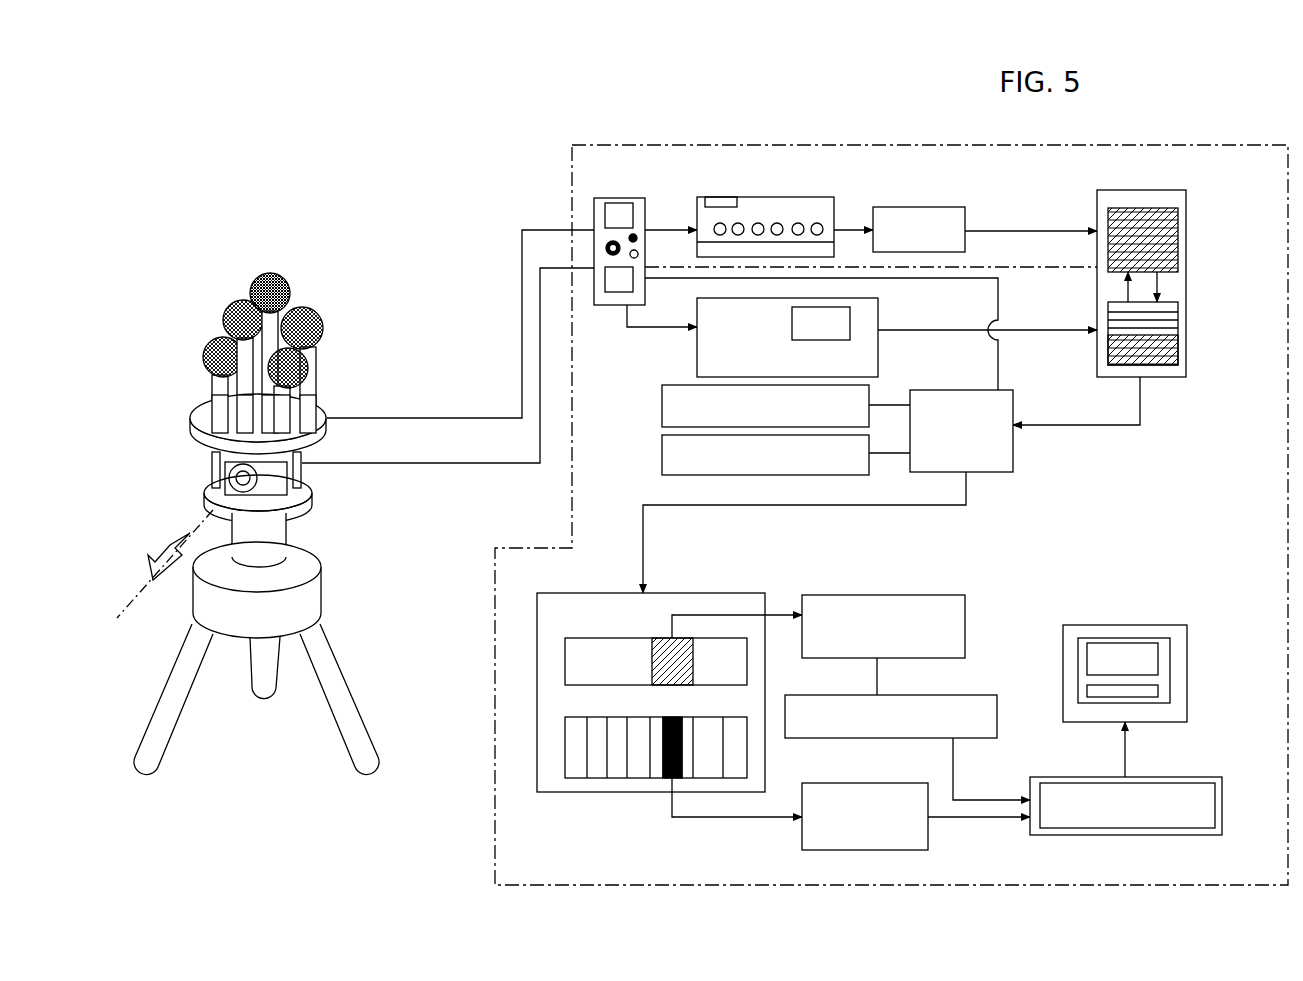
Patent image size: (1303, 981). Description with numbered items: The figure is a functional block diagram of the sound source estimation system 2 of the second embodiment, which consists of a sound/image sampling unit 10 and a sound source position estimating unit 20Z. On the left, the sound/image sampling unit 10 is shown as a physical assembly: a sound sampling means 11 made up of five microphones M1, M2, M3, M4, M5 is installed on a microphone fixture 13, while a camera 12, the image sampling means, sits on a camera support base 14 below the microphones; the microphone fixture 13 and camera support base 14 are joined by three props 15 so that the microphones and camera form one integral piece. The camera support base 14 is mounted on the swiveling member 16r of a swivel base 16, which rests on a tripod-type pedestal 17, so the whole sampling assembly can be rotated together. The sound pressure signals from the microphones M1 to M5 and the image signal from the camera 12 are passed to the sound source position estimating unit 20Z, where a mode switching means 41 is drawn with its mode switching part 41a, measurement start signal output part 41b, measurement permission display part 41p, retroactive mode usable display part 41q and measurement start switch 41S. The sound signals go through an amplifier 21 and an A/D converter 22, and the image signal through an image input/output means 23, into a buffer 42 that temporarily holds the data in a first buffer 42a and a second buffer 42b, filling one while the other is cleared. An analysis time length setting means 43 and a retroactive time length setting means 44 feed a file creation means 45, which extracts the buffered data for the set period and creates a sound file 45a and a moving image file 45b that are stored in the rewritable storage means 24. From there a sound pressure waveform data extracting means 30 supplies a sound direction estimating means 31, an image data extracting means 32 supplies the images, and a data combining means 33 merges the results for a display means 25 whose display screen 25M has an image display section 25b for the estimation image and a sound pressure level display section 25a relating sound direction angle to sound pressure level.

The sound source estimation system 2 is at (413, 225).
The sound/image sampling unit 10 is at (345, 347).
The sound sampling means 11 is at (205, 383).
The camera 12 is at (232, 468).
The microphone fixture 13 is at (195, 413).
The camera support base 14 is at (310, 483).
The props 15 is at (213, 460).
The swivel base 16 is at (297, 600).
The swiveling member 16r is at (268, 552).
The pedestal 17 is at (323, 670).
The microphone M1 is at (303, 365).
The microphone M2 is at (307, 310).
The microphone M3 is at (232, 303).
The microphone M4 is at (208, 342).
The microphone M5 is at (258, 277).
The sound source position estimating unit 20Z is at (1167, 147).
The amplifier 21 is at (777, 197).
The A/D converter 22 is at (905, 207).
The image input/output means 23 is at (878, 320).
The storage means 24 is at (661, 677).
The display means 25 is at (1137, 657).
The display screen 25M is at (1165, 664).
The sound pressure level display section 25a is at (1090, 686).
The image display section 25b is at (1103, 658).
The sound pressure waveform data extracting means 30 is at (905, 595).
The sound direction estimating means 31 is at (910, 695).
The image data extracting means 32 is at (820, 783).
The data combining means 33 is at (1175, 777).
The mode switching means 41 is at (596, 245).
The mode switching part 41a is at (617, 215).
The measurement start signal output part 41b is at (617, 277).
The measurement permission display part 41p is at (637, 235).
The retroactive mode usable display part 41q is at (630, 253).
The measurement start switch 41S is at (607, 246).
The buffer 42 is at (1181, 269).
The first buffer 42a is at (1160, 208).
The second buffer 42b is at (1165, 302).
The analysis time length setting means 43 is at (662, 402).
The retroactive time length setting means 44 is at (662, 450).
The file creation means 45 is at (920, 390).
The sound file 45a is at (625, 638).
The moving image file 45b is at (625, 717).